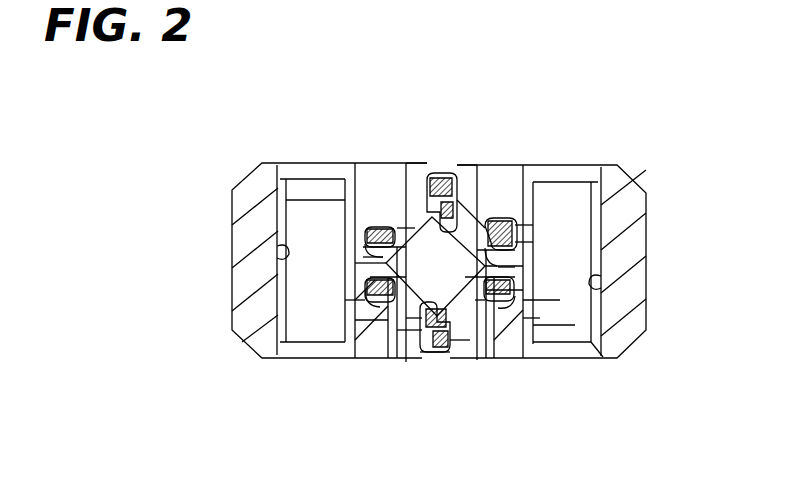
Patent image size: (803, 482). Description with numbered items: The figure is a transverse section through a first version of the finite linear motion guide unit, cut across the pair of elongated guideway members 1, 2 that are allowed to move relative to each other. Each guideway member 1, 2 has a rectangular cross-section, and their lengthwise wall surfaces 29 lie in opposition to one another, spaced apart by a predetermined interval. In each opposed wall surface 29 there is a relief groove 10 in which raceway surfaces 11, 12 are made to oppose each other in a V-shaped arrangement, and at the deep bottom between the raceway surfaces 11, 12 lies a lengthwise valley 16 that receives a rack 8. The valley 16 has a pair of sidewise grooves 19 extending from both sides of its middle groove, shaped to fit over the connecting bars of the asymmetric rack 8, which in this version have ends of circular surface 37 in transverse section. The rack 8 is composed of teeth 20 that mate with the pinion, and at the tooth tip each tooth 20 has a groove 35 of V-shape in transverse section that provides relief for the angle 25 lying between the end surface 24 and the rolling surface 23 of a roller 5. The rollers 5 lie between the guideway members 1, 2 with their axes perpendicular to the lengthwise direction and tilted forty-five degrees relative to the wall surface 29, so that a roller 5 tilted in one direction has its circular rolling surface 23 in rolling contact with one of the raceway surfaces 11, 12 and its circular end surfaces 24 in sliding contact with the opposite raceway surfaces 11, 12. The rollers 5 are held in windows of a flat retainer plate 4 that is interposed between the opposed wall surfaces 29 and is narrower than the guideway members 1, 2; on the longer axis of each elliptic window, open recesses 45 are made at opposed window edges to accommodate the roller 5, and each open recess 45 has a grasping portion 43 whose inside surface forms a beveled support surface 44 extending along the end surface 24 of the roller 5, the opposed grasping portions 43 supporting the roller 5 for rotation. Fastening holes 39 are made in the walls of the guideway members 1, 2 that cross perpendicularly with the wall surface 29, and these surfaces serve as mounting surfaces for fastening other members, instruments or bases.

The guideway member 1 is at (317, 245).
The guideway member 2 is at (568, 240).
The retainer plate 4 is at (435, 222).
The roller 5 is at (544, 156).
The rack 8 is at (424, 276).
The relief groove 10 is at (520, 180).
The raceway surface 11 is at (390, 175).
The raceway surface 12 is at (497, 363).
The valley 16 is at (484, 263).
The sidewise groove 19 is at (477, 368).
The tooth 20 is at (448, 374).
The rolling surface 23 is at (471, 403).
The end surface 24 is at (556, 181).
The angle 25 is at (299, 165).
The wall surface 29 is at (437, 393).
The groove 35 is at (554, 339).
The circular surface 37 is at (468, 269).
The fastening hole 39 is at (435, 275).
The grasping portion 43 is at (495, 173).
The beveled support surface 44 is at (478, 143).
The open recess 45 is at (419, 165).